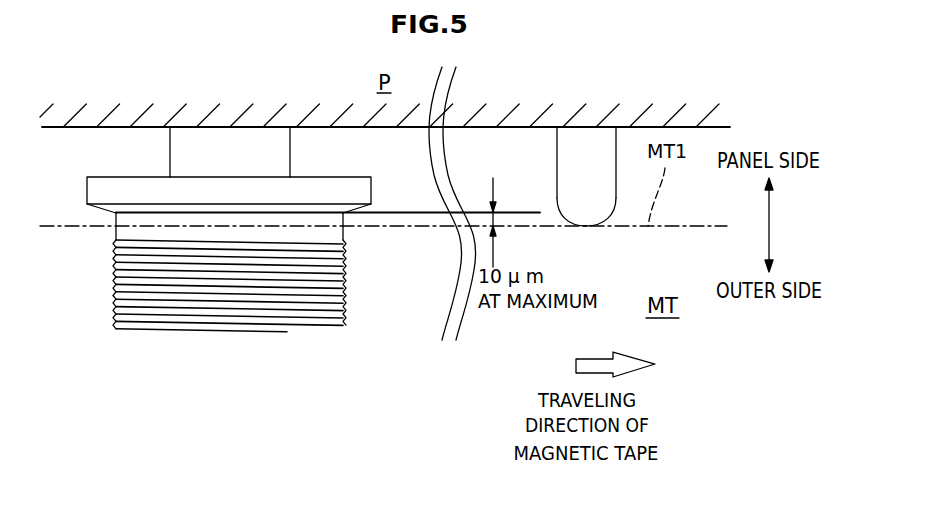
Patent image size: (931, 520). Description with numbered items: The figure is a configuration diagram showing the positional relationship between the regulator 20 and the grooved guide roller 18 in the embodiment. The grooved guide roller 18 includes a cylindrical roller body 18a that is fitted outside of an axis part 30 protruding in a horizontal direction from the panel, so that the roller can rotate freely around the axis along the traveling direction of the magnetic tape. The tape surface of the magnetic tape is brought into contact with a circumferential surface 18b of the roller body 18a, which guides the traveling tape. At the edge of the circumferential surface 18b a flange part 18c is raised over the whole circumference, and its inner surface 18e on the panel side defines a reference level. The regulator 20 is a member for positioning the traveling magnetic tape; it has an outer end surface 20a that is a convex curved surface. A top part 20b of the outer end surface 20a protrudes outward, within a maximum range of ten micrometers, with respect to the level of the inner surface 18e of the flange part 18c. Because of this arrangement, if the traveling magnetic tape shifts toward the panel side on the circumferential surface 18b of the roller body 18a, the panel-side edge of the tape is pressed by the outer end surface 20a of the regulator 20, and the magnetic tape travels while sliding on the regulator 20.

The grooved guide roller 18 is at (237, 293).
The roller body 18a is at (112, 278).
The circumferential surface 18b is at (366, 328).
The flange part 18c is at (145, 183).
The inner surface 18e is at (102, 209).
The regulator 20 is at (621, 156).
The outer end surface 20a is at (610, 217).
The top part 20b is at (583, 227).
The axis part 30 is at (240, 140).